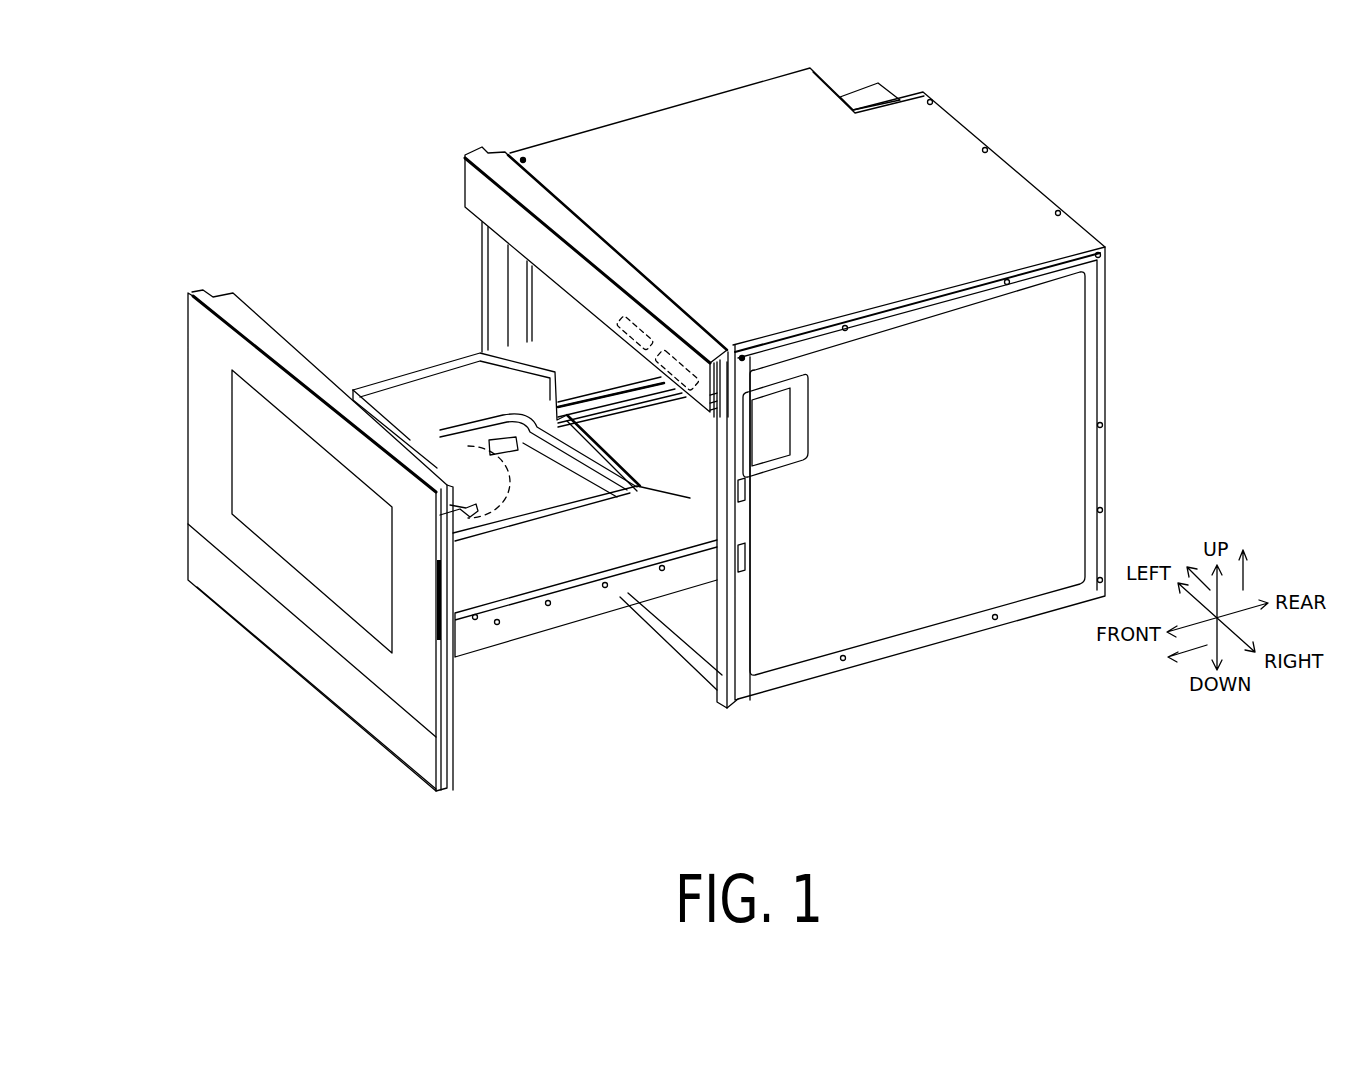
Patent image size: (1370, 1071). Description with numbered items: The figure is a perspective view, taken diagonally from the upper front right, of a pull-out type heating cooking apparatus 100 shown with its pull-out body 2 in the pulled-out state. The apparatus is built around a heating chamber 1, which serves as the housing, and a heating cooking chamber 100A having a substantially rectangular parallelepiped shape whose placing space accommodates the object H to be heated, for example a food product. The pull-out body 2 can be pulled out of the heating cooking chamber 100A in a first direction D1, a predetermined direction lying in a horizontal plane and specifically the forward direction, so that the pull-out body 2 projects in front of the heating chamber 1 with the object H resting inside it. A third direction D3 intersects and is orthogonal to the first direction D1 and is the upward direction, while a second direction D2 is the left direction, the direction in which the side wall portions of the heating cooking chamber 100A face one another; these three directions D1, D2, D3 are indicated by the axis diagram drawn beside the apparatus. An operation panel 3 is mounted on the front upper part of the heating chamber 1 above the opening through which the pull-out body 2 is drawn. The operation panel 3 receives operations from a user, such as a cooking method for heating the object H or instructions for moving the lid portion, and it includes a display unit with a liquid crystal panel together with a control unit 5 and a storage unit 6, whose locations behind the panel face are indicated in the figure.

The pull-out type heating cooking apparatus 100 is at (238, 141).
The heating cooking chamber 100A is at (555, 302).
The heating chamber 1 is at (715, 93).
The pull-out body 2 is at (248, 298).
The operation panel 3 is at (462, 197).
The control unit 5 is at (680, 350).
The storage unit 6 is at (628, 317).
The object to be heated H is at (487, 512).
The first direction D1 is at (1190, 653).
The second direction D2 is at (1210, 572).
The third direction D3 is at (1247, 572).